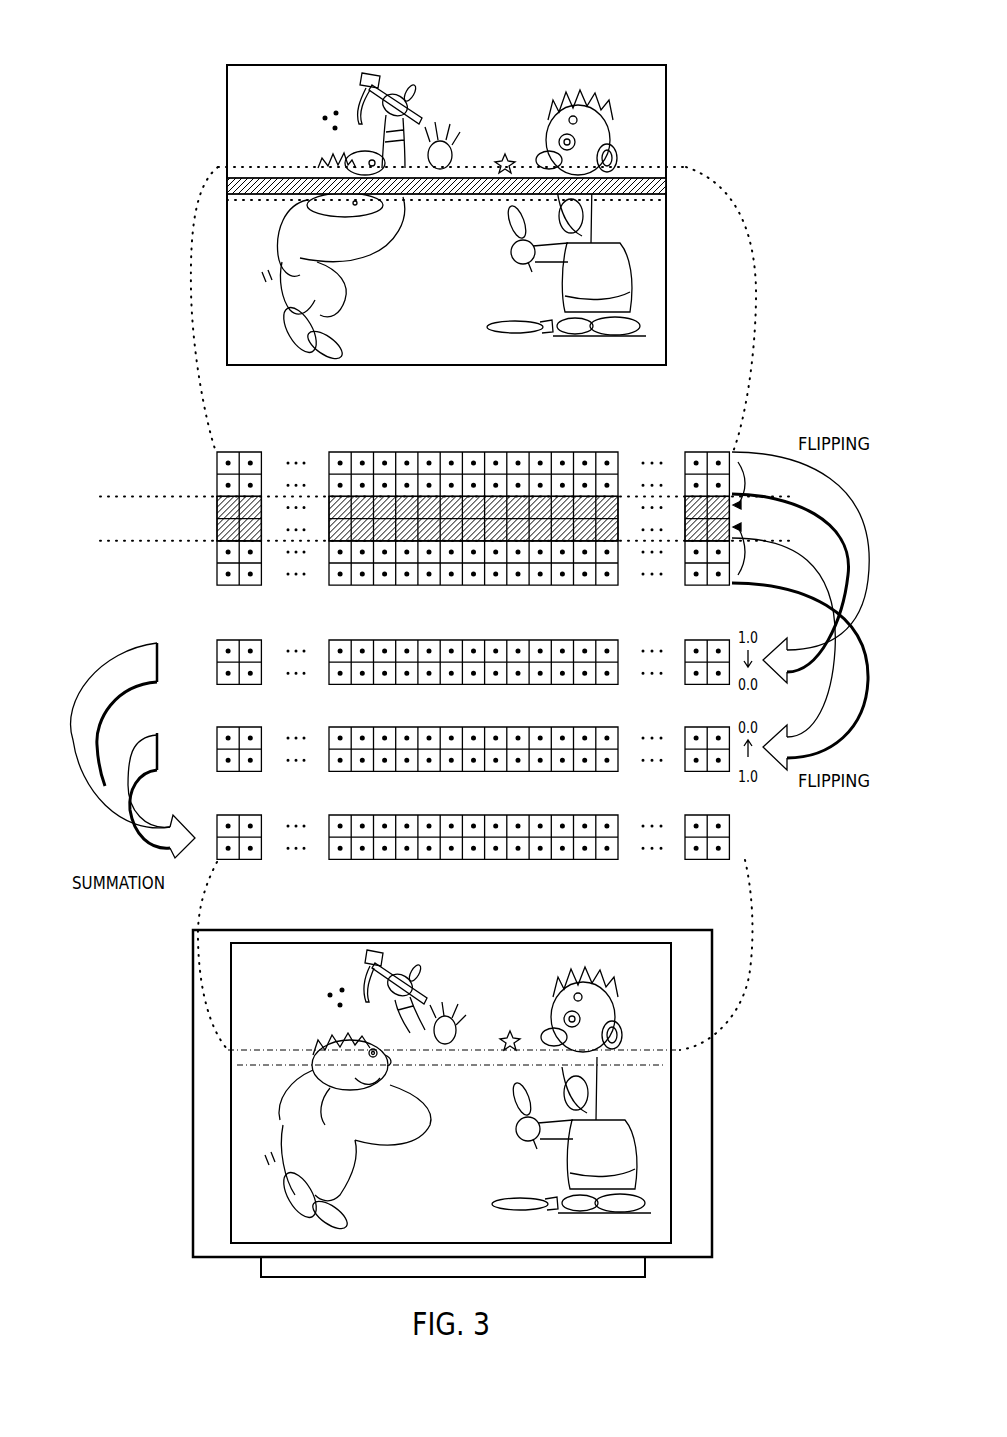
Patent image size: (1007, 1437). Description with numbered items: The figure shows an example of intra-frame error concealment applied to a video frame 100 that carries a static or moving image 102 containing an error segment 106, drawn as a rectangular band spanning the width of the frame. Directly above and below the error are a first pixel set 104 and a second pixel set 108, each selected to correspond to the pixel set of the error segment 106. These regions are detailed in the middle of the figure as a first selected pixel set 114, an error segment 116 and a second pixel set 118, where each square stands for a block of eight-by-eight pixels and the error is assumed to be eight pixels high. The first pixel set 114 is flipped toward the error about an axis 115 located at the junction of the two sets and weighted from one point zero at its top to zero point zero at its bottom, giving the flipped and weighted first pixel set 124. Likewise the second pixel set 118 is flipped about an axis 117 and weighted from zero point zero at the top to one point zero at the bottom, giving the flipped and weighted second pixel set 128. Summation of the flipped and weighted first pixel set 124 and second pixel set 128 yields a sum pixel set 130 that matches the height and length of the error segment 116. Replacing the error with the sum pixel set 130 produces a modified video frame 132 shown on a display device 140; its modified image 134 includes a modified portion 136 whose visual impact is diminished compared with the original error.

The video frame 100 is at (268, 53).
The static or moving image 102 is at (613, 112).
The first pixel set 104 is at (262, 173).
The error segment 106 is at (640, 176).
The second pixel set 108 is at (262, 197).
The first selected pixel set 114 is at (210, 452).
The axis 115 is at (140, 494).
The error segment 116 is at (210, 497).
The axis 117 is at (140, 543).
The second pixel set 118 is at (210, 541).
The flipped and weighted first pixel set 124 is at (210, 640).
The flipped and weighted second pixel set 128 is at (210, 727).
The sum pixel set 130 is at (742, 815).
The modified video frame 132 is at (258, 995).
The modified image 134 is at (620, 993).
The modified portion 136 is at (266, 1060).
The display device 140 is at (714, 1185).